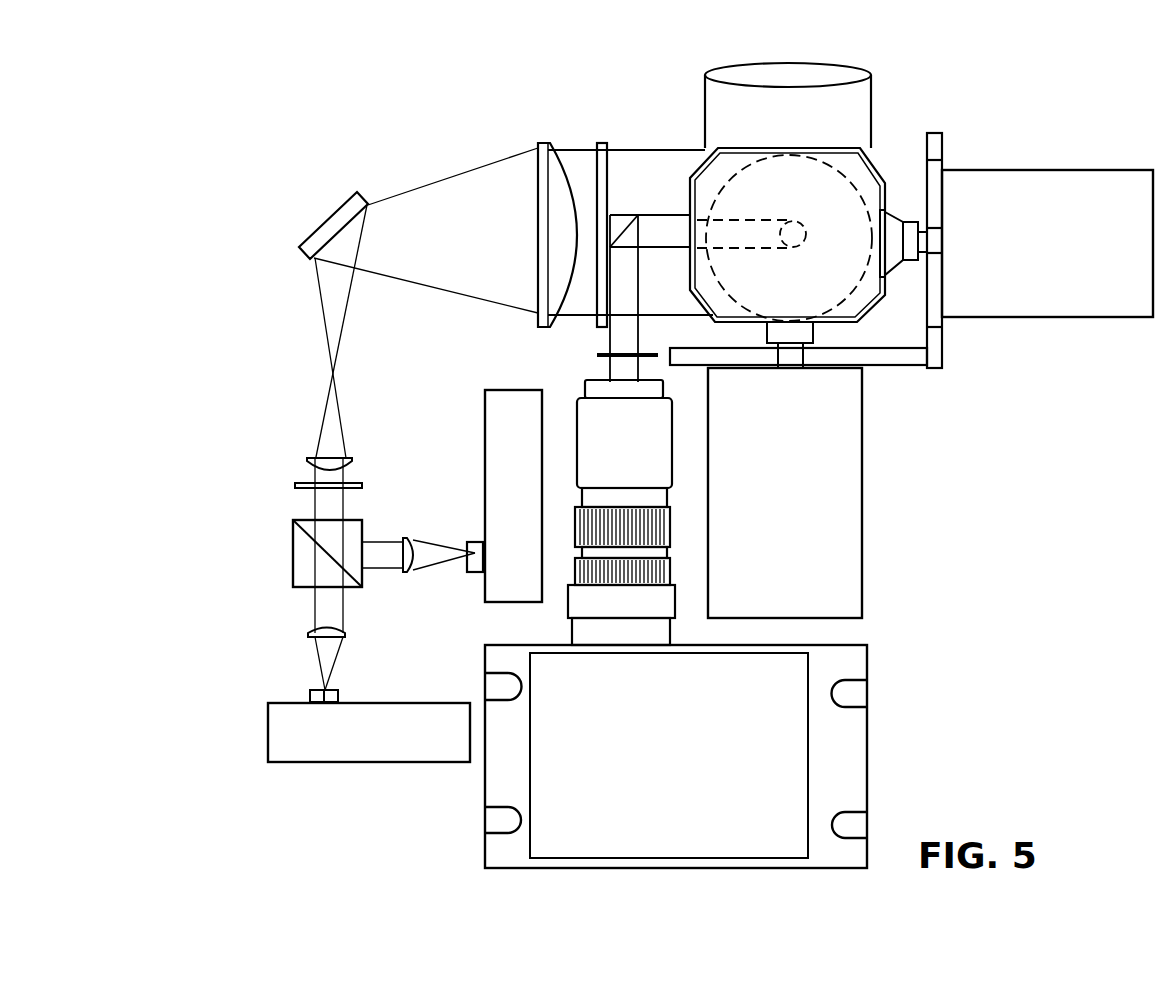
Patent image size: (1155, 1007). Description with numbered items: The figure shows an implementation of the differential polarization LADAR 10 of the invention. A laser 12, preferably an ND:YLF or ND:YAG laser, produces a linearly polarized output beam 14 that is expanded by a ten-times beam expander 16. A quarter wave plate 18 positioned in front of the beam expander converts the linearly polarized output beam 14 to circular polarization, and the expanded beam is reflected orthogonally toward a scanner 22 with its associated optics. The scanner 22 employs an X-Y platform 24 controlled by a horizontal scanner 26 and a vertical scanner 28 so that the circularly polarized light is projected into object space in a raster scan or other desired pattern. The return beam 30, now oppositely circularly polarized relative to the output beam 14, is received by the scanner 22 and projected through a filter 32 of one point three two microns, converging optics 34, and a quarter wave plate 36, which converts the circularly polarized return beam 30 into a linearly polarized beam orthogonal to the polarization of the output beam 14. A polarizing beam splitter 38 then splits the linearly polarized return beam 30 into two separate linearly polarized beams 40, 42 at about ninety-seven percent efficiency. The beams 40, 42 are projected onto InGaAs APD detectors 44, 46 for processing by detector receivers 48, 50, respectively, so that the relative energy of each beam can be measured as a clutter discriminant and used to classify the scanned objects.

The LADAR 10 is at (186, 121).
The laser 12 is at (668, 839).
The output beam 14 is at (627, 345).
The beam expander 16 is at (631, 472).
The quarter wave plate 18 is at (596, 354).
The scanner 22 is at (918, 378).
The X-Y platform 24 is at (878, 168).
The horizontal scanner 26 is at (790, 599).
The vertical scanner 28 is at (1057, 293).
The return beam 30 is at (802, 131).
The filter 32 is at (599, 141).
The converging optics 34 is at (534, 148).
The quarter wave plate 36 is at (292, 486).
The polarizing beam splitter 38 is at (290, 548).
The linearly polarized beam 40 is at (388, 570).
The linearly polarized beam 42 is at (342, 612).
The InGaAs APD detector 44 is at (469, 540).
The InGaAs APD detector 46 is at (307, 695).
The detector receiver 48 is at (531, 463).
The detector receiver 50 is at (405, 758).